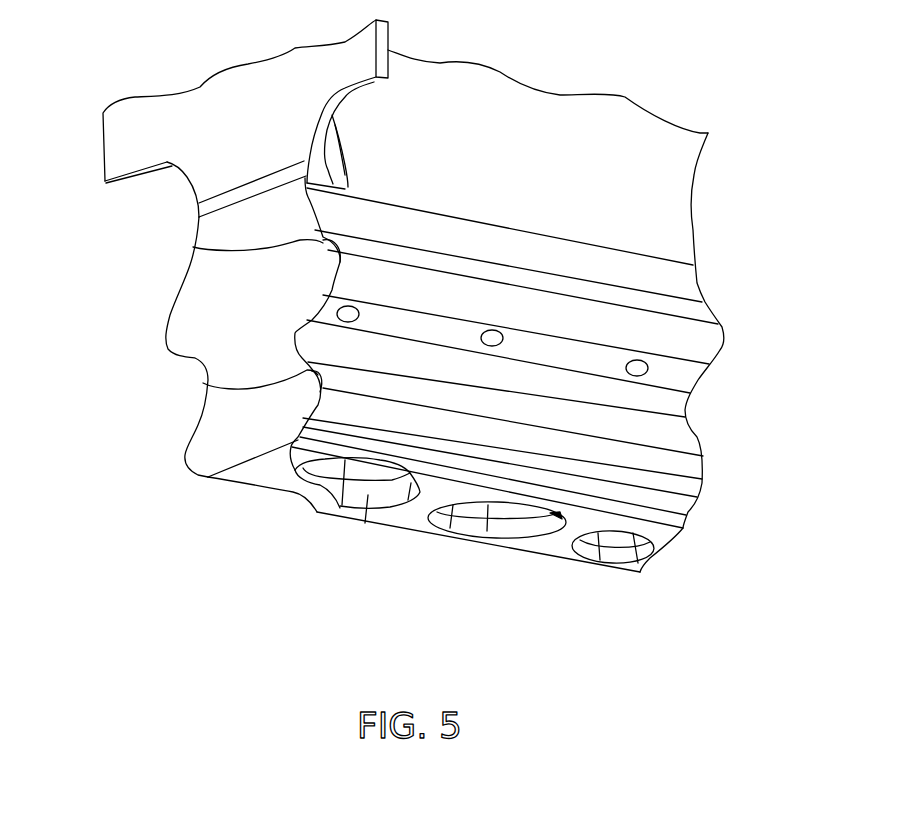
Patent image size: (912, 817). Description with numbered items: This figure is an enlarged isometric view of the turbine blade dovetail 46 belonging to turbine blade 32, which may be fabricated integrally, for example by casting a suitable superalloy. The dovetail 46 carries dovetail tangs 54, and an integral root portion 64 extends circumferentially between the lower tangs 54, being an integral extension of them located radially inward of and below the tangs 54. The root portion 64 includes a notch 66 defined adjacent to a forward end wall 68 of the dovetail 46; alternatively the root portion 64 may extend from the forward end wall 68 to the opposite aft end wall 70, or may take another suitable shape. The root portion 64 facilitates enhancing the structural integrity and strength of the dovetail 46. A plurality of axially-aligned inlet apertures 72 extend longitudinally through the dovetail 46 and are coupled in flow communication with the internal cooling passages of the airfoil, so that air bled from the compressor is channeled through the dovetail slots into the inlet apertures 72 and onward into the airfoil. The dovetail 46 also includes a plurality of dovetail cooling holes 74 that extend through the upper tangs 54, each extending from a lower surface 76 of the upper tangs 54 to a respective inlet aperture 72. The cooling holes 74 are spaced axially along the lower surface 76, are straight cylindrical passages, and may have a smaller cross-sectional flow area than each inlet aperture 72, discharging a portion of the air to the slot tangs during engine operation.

The turbine blade 32 is at (128, 86).
The turbine blade dovetail 46 is at (703, 300).
The dovetail tangs 54 is at (193, 247).
The root portion 64 is at (557, 553).
The notch 66 is at (247, 472).
The forward end wall 68 is at (260, 320).
The aft end wall 70 is at (660, 440).
The inlet apertures 72 is at (368, 497).
The dovetail cooling holes 74 is at (348, 307).
The lower surface 76 is at (592, 360).